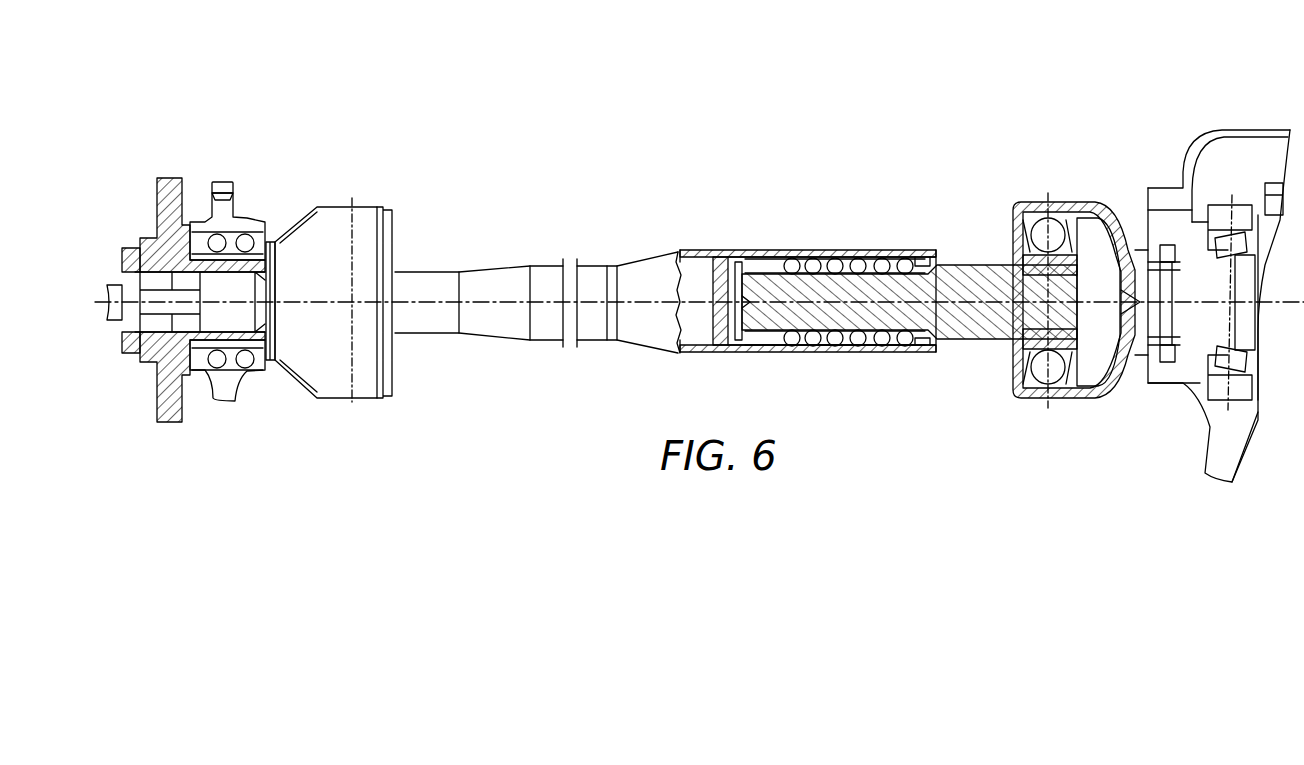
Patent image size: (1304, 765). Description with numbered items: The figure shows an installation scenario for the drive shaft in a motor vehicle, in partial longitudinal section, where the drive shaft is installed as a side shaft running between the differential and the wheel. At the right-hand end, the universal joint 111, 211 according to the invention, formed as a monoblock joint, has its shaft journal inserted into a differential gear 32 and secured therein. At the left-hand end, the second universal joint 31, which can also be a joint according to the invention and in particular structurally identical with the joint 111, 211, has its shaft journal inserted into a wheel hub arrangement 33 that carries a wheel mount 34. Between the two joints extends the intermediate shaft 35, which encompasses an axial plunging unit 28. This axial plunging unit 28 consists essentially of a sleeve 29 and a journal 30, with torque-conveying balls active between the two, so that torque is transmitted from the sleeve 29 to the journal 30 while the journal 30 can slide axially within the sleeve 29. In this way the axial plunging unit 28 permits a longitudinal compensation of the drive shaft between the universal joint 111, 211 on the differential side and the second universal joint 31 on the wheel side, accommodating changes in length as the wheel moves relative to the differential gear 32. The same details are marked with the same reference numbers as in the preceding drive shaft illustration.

The wheel hub arrangement 33 is at (193, 165).
The wheel mount 34 is at (257, 177).
The second universal joint 31 is at (352, 177).
The intermediate shaft 35 is at (550, 238).
The axial plunging unit 28 is at (863, 216).
The sleeve 29 is at (793, 254).
The journal 30 is at (870, 290).
The universal joint 111 is at (1083, 254).
The universal joint 211 is at (1073, 175).
The differential gear 32 is at (1236, 111).